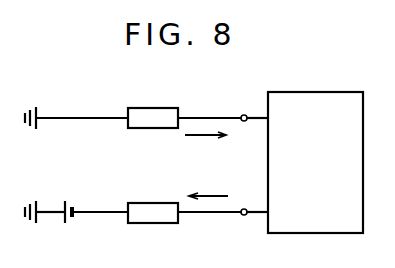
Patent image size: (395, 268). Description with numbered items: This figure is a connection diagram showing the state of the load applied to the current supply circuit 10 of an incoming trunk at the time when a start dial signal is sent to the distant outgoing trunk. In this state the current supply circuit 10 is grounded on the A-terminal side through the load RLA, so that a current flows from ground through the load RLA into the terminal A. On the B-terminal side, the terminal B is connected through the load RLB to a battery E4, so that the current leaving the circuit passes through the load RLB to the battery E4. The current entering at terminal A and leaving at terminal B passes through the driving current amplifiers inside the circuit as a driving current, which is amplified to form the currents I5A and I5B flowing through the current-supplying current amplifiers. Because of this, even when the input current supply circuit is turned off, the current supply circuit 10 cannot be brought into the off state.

The current supply circuit 10 is at (312, 92).
The load RLA is at (178, 108).
The load RLB is at (178, 203).
The terminal A is at (244, 115).
The terminal B is at (244, 209).
The battery E4 is at (71, 204).
The current I5A is at (205, 145).
The current I5B is at (208, 186).